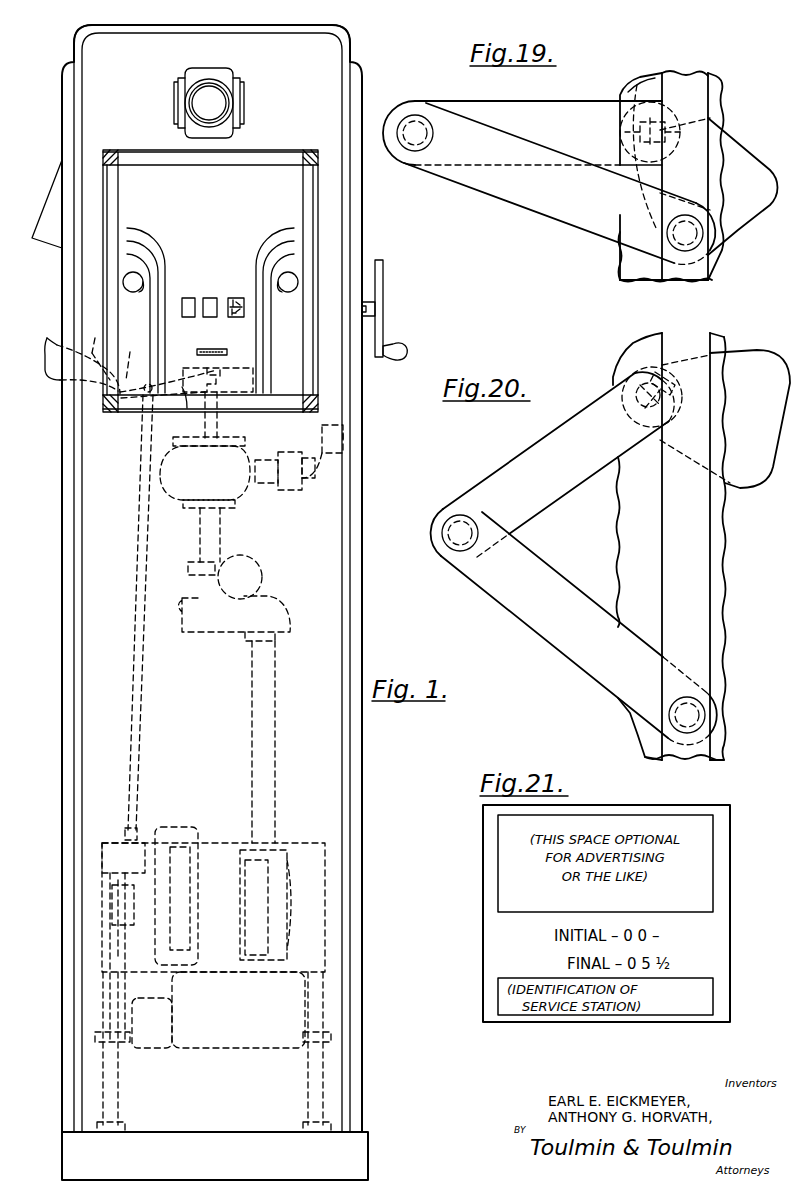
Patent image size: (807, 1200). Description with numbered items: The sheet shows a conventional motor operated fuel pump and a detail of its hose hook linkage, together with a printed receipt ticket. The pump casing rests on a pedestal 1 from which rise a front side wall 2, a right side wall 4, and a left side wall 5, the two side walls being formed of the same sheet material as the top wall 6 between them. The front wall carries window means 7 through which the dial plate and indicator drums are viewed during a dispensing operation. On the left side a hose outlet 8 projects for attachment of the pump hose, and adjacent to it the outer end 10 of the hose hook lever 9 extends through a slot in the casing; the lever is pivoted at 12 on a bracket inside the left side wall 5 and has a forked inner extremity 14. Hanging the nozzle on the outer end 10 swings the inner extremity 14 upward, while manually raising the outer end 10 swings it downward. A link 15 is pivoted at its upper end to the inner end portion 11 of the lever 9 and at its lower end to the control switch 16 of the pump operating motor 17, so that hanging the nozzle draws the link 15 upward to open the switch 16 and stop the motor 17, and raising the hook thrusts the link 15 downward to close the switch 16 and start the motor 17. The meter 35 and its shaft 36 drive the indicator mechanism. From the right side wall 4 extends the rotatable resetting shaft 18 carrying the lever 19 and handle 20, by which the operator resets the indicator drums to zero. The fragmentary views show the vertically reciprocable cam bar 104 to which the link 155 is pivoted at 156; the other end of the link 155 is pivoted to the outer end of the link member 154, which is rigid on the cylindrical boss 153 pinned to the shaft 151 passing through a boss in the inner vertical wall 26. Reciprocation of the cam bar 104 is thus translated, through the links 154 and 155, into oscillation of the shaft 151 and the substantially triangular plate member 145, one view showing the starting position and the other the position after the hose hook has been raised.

In FIG. 1, the pedestal 1 is at (256, 1166).
In FIG. 1, the front side wall 2 is at (232, 1090).
In FIG. 1, the right side wall 4 is at (362, 1022).
In FIG. 1, the left side wall 5 is at (62, 992).
In FIG. 1, the top wall 6 is at (286, 24).
In FIG. 1, the window means 7 is at (232, 203).
In FIG. 1, the hose outlet 8 is at (62, 250).
In FIG. 1, the hose hook lever 9 is at (98, 352).
In FIG. 1, the outer end of hose hook 10 is at (74, 358).
In FIG. 1, the inner end portion of lever 11 is at (178, 409).
In FIG. 1, the pivot 12 is at (168, 368).
In FIG. 1, the forked inner extremity 14 is at (207, 367).
In FIG. 1, the link 15 is at (143, 488).
In FIG. 1, the control switch 16 is at (128, 860).
In FIG. 1, the pump operating motor 17 is at (218, 893).
In FIG. 1, the resetting shaft 18 is at (370, 300).
In FIG. 1, the lever 19 is at (383, 345).
In FIG. 1, the handle 20 is at (397, 351).
In FIG. 1, the meter 35 is at (246, 500).
In FIG. 1, the meter shaft 36 is at (213, 420).
In FIG. 19, the inner vertical wall 26 is at (722, 126).
In FIG. 20, the inner vertical wall 26 is at (727, 546).
In FIG. 19, the cam bar 104 is at (691, 100).
In FIG. 20, the cam bar 104 is at (677, 341).
In FIG. 19, the plate member 145 is at (738, 231).
In FIG. 20, the plate member 145 is at (770, 360).
In FIG. 19, the shaft 151 is at (634, 92).
In FIG. 20, the shaft 151 is at (664, 389).
In FIG. 19, the cylindrical boss 153 is at (620, 134).
In FIG. 20, the cylindrical boss 153 is at (640, 420).
In FIG. 19, the link member 154 is at (577, 112).
In FIG. 20, the link member 154 is at (546, 444).
In FIG. 19, the link 155 is at (572, 220).
In FIG. 20, the link 155 is at (571, 593).
In FIG. 19, the pivot 156 is at (668, 233).
In FIG. 20, the pivot 156 is at (680, 712).